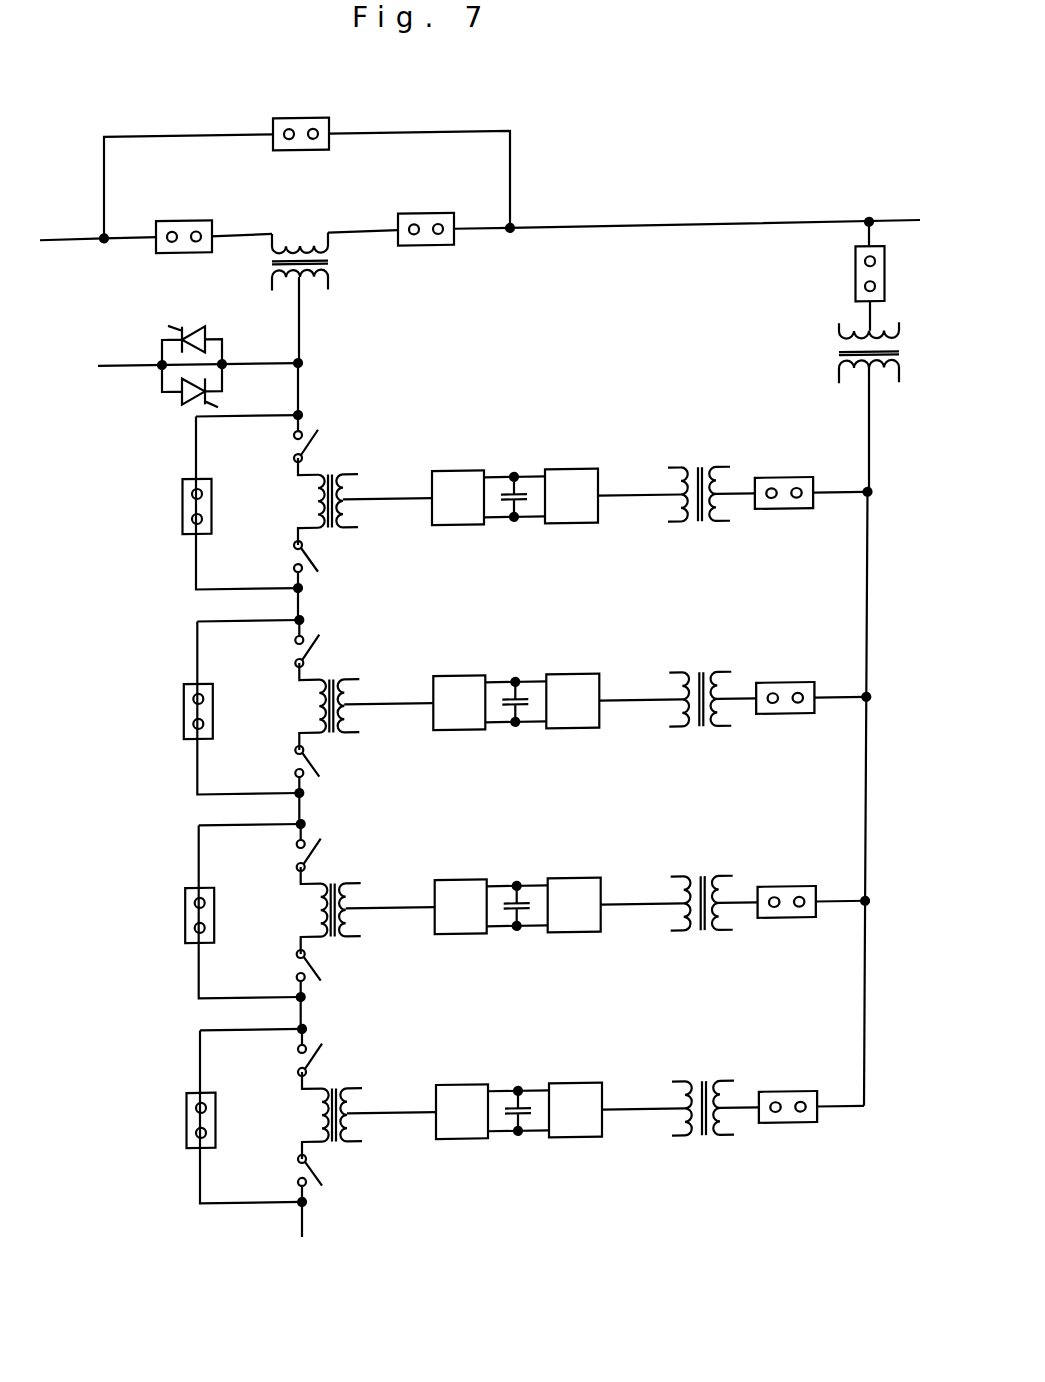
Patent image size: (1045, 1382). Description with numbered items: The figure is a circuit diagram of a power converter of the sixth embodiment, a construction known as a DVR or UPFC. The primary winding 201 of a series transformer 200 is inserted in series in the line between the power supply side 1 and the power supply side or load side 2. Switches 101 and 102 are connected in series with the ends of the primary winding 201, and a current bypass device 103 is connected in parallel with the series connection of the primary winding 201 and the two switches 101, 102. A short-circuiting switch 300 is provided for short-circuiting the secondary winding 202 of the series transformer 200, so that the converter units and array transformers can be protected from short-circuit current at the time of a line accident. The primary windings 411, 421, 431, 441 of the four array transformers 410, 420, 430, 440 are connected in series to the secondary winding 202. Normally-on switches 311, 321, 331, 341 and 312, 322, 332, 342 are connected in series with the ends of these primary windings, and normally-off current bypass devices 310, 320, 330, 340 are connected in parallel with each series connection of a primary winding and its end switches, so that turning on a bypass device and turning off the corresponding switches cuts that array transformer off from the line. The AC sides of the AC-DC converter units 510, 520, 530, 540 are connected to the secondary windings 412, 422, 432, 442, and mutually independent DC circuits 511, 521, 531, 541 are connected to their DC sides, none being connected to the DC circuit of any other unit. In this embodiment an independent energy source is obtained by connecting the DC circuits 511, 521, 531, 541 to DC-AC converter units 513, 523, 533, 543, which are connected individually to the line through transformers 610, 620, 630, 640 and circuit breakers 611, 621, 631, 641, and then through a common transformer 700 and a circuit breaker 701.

The power supply side 1 is at (70, 232).
The power supply side or load side 2 is at (568, 229).
The switch 101 is at (176, 218).
The switch 102 is at (432, 214).
The current bypass device 103 is at (310, 118).
The series transformer 200 is at (335, 268).
The primary winding 201 is at (303, 243).
The secondary winding 202 is at (293, 281).
The short-circuiting switch 300 is at (160, 336).
The current bypass device 310 is at (194, 503).
The switch 311 is at (264, 445).
The switch 312 is at (264, 558).
The current bypass device 320 is at (195, 708).
The switch 321 is at (265, 650).
The switch 322 is at (265, 763).
The current bypass device 330 is at (197, 912).
The switch 331 is at (267, 854).
The switch 332 is at (267, 967).
The current bypass device 340 is at (198, 1117).
The switch 341 is at (268, 1059).
The switch 342 is at (268, 1172).
The array transformer 410 is at (365, 488).
The primary winding 411 is at (346, 516).
The secondary winding 412 is at (384, 481).
The array transformer 420 is at (366, 693).
The primary winding 421 is at (347, 721).
The secondary winding 422 is at (386, 686).
The array transformer 430 is at (368, 897).
The primary winding 431 is at (349, 925).
The secondary winding 432 is at (387, 890).
The array transformer 440 is at (369, 1102).
The primary winding 441 is at (350, 1130).
The secondary winding 442 is at (388, 1095).
The AC-DC converter unit 510 is at (470, 460).
The DC circuit 511 is at (522, 469).
The DC-AC converter unit 513 is at (583, 458).
The AC-DC converter unit 520 is at (471, 665).
The DC circuit 521 is at (523, 674).
The DC-AC converter unit 523 is at (584, 663).
The AC-DC converter unit 530 is at (473, 869).
The DC circuit 531 is at (525, 878).
The DC-AC converter unit 533 is at (586, 867).
The AC-DC converter unit 540 is at (474, 1074).
The DC circuit 541 is at (526, 1083).
The DC-AC converter unit 543 is at (587, 1072).
The transformer 610 is at (676, 457).
The circuit breaker 611 is at (810, 463).
The transformer 620 is at (677, 662).
The circuit breaker 621 is at (811, 668).
The transformer 630 is at (679, 866).
The circuit breaker 631 is at (813, 872).
The transformer 640 is at (680, 1071).
The circuit breaker 641 is at (811, 1077).
The transformer 700 is at (835, 358).
The circuit breaker 701 is at (855, 277).